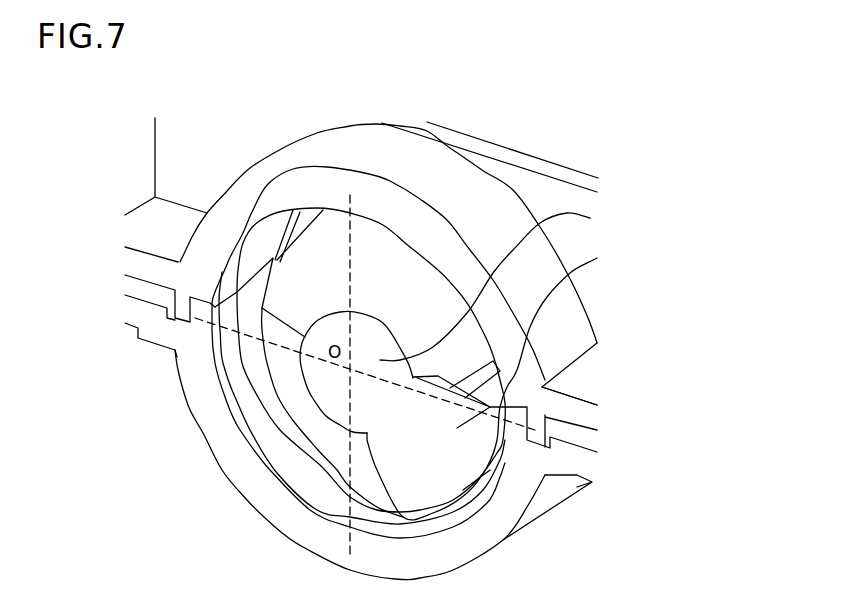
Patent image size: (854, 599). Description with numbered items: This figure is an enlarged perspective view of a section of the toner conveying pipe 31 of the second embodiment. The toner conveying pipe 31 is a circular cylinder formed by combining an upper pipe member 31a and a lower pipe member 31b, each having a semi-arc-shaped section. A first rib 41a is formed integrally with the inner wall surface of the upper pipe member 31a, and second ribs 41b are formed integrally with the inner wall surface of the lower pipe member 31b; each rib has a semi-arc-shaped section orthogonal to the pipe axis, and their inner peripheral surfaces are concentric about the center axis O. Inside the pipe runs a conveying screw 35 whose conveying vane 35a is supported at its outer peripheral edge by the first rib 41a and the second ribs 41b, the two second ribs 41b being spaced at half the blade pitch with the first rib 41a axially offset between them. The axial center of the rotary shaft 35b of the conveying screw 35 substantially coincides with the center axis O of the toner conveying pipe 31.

The toner conveying pipe 31 is at (619, 426).
The upper pipe member 31a is at (583, 375).
The lower pipe member 31b is at (583, 463).
The conveying screw 35 is at (481, 361).
The conveying vane 35a is at (597, 258).
The rotary shaft 35b is at (590, 218).
The first rib 41a is at (288, 238).
The second ribs 41b is at (263, 428).